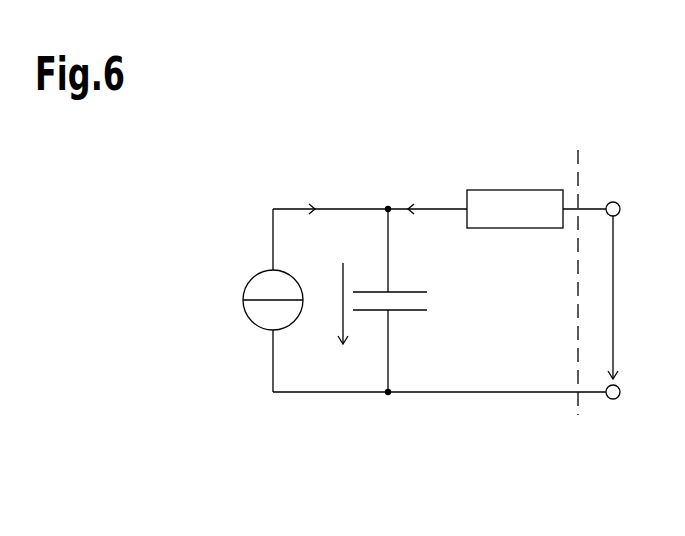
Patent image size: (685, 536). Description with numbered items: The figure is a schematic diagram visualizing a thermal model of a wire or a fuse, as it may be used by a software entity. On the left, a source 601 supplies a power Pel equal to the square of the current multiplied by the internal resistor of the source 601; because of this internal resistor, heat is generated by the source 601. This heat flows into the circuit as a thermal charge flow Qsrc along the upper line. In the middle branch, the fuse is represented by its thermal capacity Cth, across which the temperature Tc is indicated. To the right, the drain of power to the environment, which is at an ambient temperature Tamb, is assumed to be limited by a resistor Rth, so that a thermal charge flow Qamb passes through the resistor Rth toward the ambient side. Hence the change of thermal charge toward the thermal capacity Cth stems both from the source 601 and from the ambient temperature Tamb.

The source 601 is at (254, 282).
The thermal resistor Rth is at (515, 184).
The thermal capacity Cth is at (417, 301).
The thermal charge flow from source Qsrc is at (329, 184).
The thermal charge flow to ambient Qamb is at (423, 184).
The temperature of thermal capacity Tc is at (329, 298).
The ambient temperature Tamb is at (643, 297).
The electrical power Pel is at (186, 303).